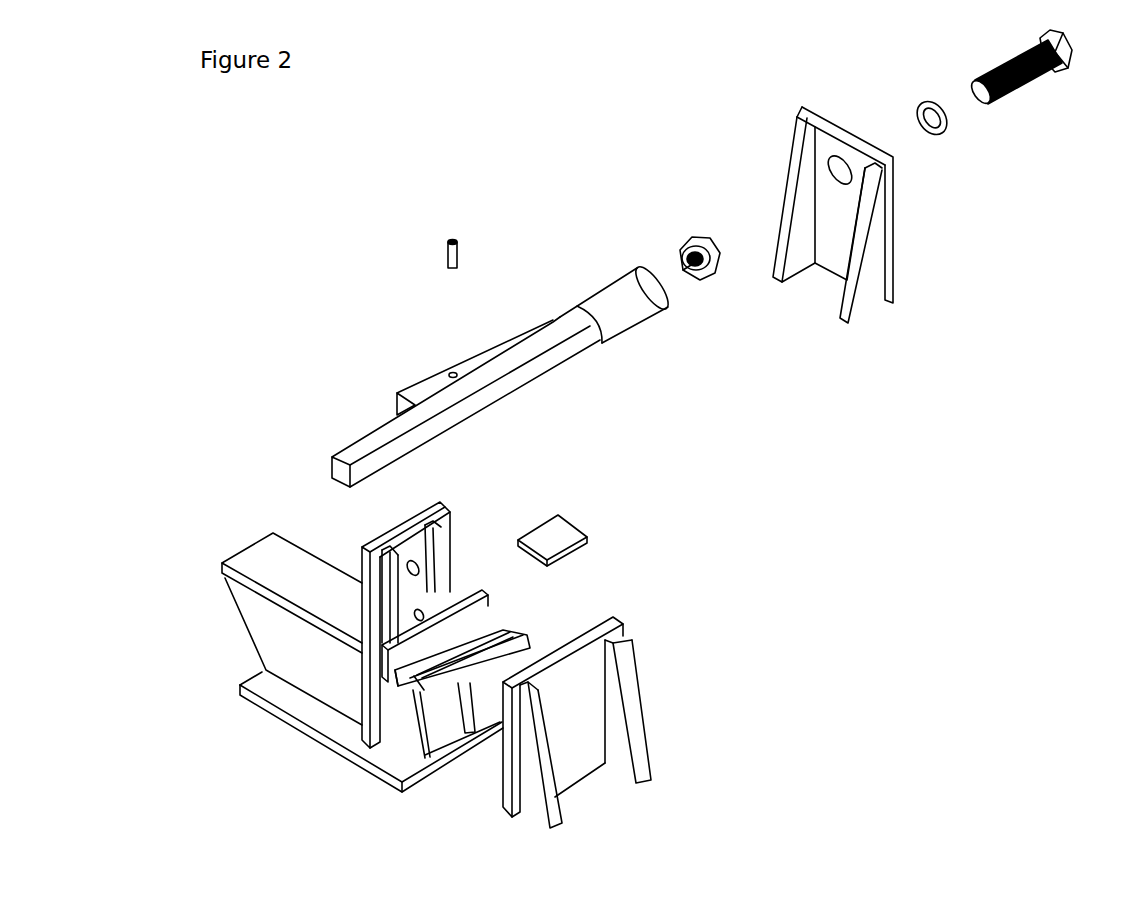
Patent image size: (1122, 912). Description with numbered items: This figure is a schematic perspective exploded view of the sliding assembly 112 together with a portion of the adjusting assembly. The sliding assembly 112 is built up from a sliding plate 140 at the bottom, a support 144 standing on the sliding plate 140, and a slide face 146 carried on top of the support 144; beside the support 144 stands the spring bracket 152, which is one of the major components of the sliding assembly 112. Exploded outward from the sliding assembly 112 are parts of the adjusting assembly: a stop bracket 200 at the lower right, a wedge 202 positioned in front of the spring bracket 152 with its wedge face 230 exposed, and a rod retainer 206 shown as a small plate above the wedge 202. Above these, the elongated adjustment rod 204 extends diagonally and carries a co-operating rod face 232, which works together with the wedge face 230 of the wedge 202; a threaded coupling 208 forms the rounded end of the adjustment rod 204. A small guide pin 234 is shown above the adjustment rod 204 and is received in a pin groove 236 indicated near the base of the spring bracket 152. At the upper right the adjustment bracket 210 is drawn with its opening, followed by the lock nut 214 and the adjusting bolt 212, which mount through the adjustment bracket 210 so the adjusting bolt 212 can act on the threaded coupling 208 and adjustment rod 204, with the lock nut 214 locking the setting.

The sliding assembly 112 is at (290, 452).
The sliding plate 140 is at (333, 725).
The support 144 is at (283, 650).
The slide face 146 is at (268, 557).
The spring bracket 152 is at (442, 505).
The stop bracket 200 is at (630, 708).
The wedge 202 is at (483, 598).
The adjustment rod 204 is at (467, 367).
The rod retainer 206 is at (555, 533).
The threaded coupling 208 is at (640, 303).
The adjustment bracket 210 is at (870, 293).
The adjusting bolt 212 is at (1030, 83).
The lock nut 214 is at (690, 233).
The wedge face 230 is at (483, 617).
The co-operating rod face 232 is at (410, 386).
The guide pin 234 is at (449, 238).
The pin groove 236 is at (420, 672).